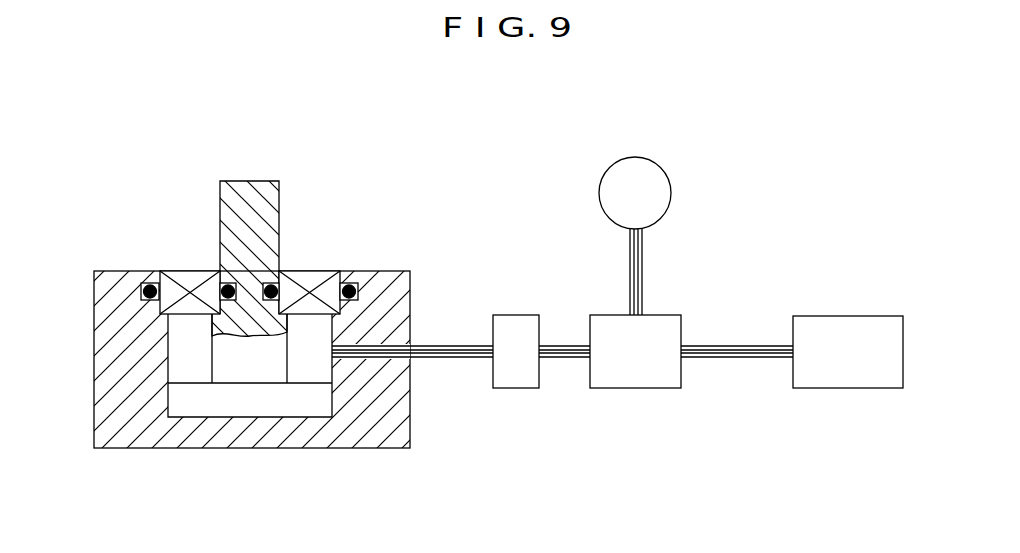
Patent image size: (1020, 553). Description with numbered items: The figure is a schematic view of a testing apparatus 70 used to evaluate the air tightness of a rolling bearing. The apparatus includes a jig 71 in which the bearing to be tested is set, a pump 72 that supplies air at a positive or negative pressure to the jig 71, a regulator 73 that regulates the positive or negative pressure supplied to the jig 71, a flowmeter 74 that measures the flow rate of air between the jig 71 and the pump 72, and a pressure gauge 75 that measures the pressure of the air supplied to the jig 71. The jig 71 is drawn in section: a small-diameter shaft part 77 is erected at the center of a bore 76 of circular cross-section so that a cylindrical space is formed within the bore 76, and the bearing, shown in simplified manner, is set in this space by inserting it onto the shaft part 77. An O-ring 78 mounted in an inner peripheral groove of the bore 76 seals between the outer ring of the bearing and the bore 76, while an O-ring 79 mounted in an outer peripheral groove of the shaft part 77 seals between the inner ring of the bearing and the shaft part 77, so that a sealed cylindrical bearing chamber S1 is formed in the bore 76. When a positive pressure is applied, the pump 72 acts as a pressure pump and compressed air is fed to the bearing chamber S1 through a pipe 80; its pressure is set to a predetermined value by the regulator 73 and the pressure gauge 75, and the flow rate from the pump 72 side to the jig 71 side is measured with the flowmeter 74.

The testing apparatus 70 is at (532, 180).
The jig 71 is at (130, 398).
The pump 72 is at (858, 357).
The regulator 73 is at (643, 370).
The flowmeter 74 is at (517, 367).
The pressure gauge 75 is at (645, 190).
The bore 76 is at (170, 356).
The shaft part 77 is at (253, 205).
The O-ring 78 is at (350, 282).
The O-ring 79 is at (270, 284).
The pipe 80 is at (735, 345).
The bearing chamber S1 is at (312, 365).